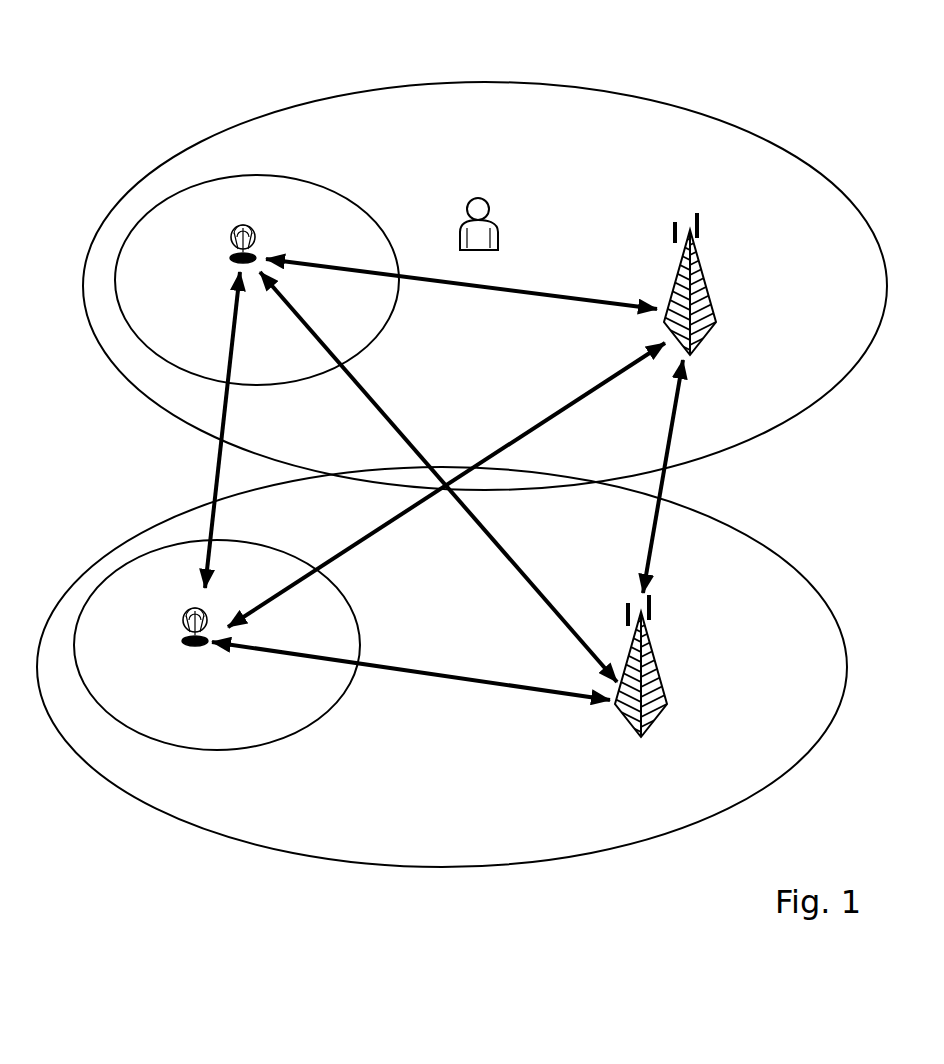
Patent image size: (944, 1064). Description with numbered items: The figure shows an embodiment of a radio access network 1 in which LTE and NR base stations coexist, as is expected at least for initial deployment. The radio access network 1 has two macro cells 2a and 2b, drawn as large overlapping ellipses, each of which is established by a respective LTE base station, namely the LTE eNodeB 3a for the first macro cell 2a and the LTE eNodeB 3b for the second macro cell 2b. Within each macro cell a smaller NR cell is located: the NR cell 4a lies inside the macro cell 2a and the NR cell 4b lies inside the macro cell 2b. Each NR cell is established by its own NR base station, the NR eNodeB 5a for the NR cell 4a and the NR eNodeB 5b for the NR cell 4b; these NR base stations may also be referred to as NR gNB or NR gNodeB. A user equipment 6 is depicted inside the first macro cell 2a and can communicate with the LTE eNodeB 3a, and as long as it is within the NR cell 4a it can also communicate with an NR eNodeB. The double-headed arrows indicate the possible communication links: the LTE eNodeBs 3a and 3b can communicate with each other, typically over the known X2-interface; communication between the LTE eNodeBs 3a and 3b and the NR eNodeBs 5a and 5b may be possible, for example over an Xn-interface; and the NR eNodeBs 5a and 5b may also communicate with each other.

The radio access network 1 is at (594, 52).
The macro cell 2a is at (472, 83).
The macro cell 2b is at (728, 527).
The LTE eNodeB 3a is at (700, 268).
The LTE eNodeB 3b is at (651, 650).
The NR cell 4a is at (332, 185).
The NR cell 4b is at (337, 585).
The NR eNodeB 5a is at (260, 232).
The NR eNodeB 5b is at (213, 612).
The user equipment 6 is at (486, 198).